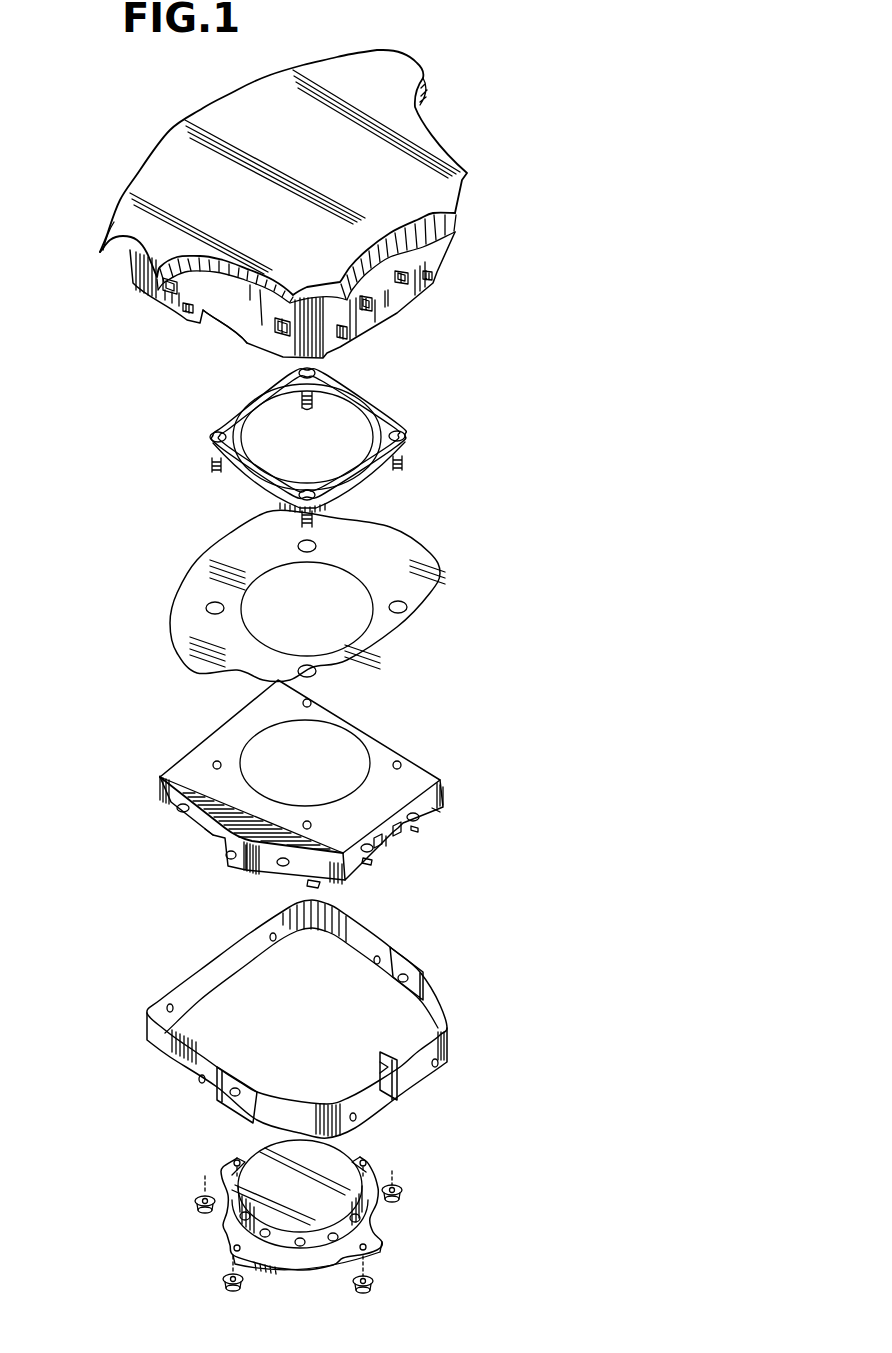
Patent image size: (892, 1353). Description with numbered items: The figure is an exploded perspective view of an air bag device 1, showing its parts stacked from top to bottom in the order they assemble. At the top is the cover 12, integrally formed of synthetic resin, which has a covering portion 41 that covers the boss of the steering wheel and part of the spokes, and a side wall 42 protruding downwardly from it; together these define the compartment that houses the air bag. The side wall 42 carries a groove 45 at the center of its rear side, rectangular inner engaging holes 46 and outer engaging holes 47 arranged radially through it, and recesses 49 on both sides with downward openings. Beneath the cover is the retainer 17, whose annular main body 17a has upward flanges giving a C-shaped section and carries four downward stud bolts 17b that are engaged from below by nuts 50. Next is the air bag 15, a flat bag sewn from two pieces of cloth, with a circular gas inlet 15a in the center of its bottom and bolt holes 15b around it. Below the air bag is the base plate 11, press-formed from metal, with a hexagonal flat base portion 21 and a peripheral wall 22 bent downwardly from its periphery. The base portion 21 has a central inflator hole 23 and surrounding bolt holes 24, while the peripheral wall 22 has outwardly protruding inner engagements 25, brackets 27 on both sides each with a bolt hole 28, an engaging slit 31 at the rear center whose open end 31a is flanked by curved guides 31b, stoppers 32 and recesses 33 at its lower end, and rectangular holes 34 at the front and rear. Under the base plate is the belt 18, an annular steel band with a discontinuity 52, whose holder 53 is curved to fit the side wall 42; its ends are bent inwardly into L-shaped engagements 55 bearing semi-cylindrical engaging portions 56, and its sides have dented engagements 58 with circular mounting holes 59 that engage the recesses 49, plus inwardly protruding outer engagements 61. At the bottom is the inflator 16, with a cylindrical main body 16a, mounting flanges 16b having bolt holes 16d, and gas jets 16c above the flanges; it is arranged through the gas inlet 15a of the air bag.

The air bag device 1 is at (470, 100).
The cover 12 is at (438, 143).
The covering portion 41 is at (152, 177).
The side wall 42 is at (433, 258).
The groove 45 is at (388, 315).
The inner engaging holes 46 is at (168, 288).
The outer engaging holes 47 is at (188, 315).
The recesses 49 is at (215, 330).
The retainer 17 is at (382, 413).
The main body 17a is at (227, 412).
The stud bolts 17b is at (312, 403).
The air bag 15 is at (438, 560).
The gas inlet 15a is at (360, 580).
The bolt holes 15b is at (295, 545).
The base plate 11 is at (398, 713).
The base portion 21 is at (415, 743).
The peripheral wall 22 is at (443, 797).
The inflator hole 23 is at (247, 743).
The bolt holes 24 is at (308, 822).
The inner engagements 25 is at (180, 817).
The brackets 27 is at (223, 843).
The bolt hole 28 is at (232, 855).
The engaging slit 31 is at (400, 807).
The open end 31a is at (388, 840).
The guides 31b is at (392, 835).
The stoppers 32 is at (172, 812).
The recesses 33 is at (207, 833).
The rectangular holes 34 is at (400, 832).
The belt 18 is at (442, 1010).
The discontinuity 52 is at (413, 1091).
The holder 53 is at (160, 1047).
The engagements 55 is at (375, 1055).
The engaging portions 56 is at (382, 1063).
The engagements 58 is at (390, 977).
The mounting hole 59 is at (400, 980).
The outer engagements 61 is at (272, 938).
The inflator 16 is at (377, 1218).
The main body 16a is at (323, 1157).
The mounting flanges 16b is at (373, 1245).
The gas jets 16c is at (333, 1243).
The bolt holes 16d is at (230, 1248).
The nuts 50 is at (195, 1200).